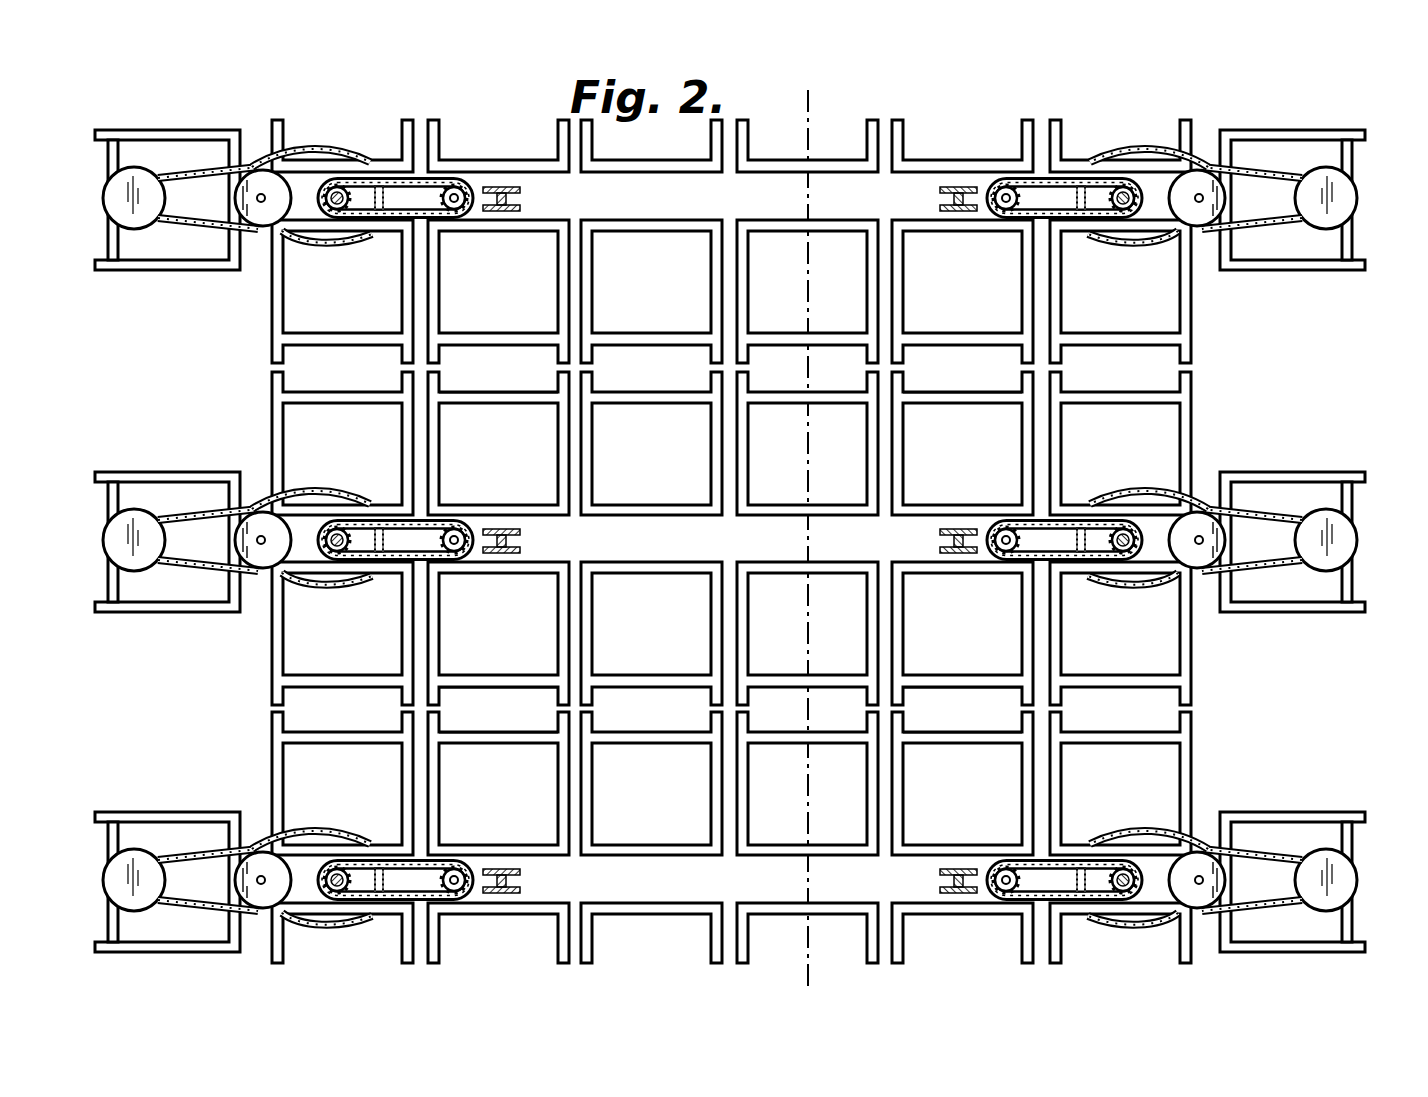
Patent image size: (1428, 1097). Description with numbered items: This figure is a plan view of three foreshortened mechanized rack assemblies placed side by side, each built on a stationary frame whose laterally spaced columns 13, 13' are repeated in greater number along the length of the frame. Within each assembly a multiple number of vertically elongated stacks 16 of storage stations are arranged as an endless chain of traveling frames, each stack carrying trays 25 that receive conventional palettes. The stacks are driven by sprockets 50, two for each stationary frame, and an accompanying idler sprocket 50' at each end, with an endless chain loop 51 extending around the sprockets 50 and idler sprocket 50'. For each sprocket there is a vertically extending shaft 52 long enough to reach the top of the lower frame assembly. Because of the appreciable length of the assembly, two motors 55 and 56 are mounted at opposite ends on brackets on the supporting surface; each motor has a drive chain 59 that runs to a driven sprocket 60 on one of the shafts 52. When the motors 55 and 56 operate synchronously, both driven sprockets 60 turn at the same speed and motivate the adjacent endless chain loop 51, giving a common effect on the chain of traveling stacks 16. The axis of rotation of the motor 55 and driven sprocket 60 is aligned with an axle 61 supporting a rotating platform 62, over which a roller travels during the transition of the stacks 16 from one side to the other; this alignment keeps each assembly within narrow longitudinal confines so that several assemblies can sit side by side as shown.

The column 13 is at (923, 539).
The column 13' is at (538, 537).
The vertically elongated stack of storage stations 16 is at (158, 125).
The tray 25 is at (520, 393).
The sprocket 50 is at (730, 587).
The idler sprocket 50' is at (730, 570).
The endless chain loop 51 is at (418, 179).
The vertically extending shaft 52 is at (336, 205).
The motor 55 is at (100, 198).
The motor 56 is at (1343, 190).
The drive chain 59 is at (182, 223).
The driven sprocket 60 is at (378, 190).
The axle 61 is at (261, 204).
The rotating platform 62 is at (266, 176).